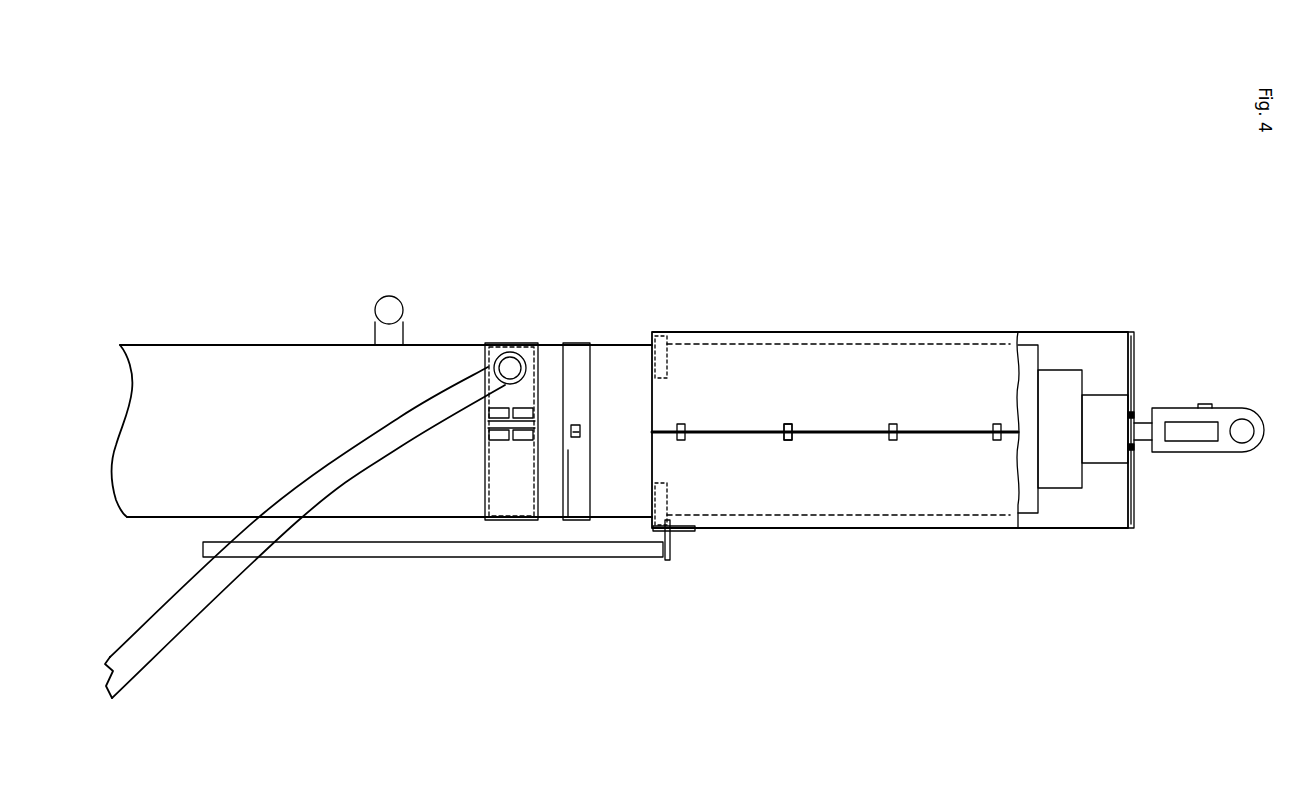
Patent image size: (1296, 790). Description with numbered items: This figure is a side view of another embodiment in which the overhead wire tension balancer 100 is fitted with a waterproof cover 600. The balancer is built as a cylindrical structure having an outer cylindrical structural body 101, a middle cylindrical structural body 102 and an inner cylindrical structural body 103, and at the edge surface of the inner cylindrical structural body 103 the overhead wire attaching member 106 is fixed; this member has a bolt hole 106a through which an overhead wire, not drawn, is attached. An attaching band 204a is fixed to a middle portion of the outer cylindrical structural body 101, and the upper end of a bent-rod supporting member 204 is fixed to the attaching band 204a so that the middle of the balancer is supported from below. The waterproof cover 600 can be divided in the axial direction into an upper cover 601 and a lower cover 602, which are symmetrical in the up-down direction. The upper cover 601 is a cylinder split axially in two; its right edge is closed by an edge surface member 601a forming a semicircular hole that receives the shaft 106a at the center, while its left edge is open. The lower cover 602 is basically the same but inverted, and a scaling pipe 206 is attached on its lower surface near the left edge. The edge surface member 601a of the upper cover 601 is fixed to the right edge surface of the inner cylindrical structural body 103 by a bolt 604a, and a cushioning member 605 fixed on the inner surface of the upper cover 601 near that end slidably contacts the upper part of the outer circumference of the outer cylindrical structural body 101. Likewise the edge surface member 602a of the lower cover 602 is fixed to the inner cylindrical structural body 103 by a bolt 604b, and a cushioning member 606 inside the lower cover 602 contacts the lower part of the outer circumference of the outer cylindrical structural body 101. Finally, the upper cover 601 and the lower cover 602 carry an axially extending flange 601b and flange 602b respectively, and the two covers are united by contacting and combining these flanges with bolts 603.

The overhead wire tension balancer 100 is at (200, 343).
The outer cylindrical structural body 101 is at (303, 363).
The inner member 102 is at (1057, 380).
The inner cylindrical structural body 103 is at (1100, 418).
The overhead wire attaching member 106 is at (1222, 450).
The bolt hole 106a is at (1242, 425).
The supporting member 204 is at (188, 604).
The attaching band 204a is at (515, 505).
The scaling pipe 206 is at (600, 550).
The waterproof cover 600 is at (728, 328).
The upper cover 601 is at (822, 332).
The edge surface member 601a is at (1134, 350).
The flange 601b is at (832, 430).
The lower cover 602 is at (925, 530).
The edge surface member 602a is at (1134, 505).
The flange 602b is at (735, 436).
The bolts 603 is at (893, 424).
The bolt 604a is at (1136, 414).
The bolt 604b is at (1136, 447).
The cushioning member 605 is at (652, 358).
The cushioning member 606 is at (672, 524).